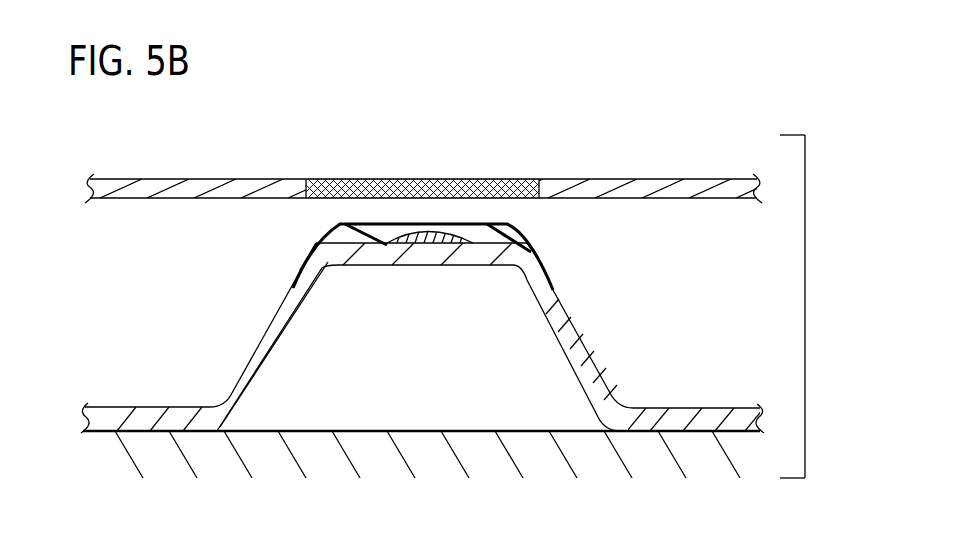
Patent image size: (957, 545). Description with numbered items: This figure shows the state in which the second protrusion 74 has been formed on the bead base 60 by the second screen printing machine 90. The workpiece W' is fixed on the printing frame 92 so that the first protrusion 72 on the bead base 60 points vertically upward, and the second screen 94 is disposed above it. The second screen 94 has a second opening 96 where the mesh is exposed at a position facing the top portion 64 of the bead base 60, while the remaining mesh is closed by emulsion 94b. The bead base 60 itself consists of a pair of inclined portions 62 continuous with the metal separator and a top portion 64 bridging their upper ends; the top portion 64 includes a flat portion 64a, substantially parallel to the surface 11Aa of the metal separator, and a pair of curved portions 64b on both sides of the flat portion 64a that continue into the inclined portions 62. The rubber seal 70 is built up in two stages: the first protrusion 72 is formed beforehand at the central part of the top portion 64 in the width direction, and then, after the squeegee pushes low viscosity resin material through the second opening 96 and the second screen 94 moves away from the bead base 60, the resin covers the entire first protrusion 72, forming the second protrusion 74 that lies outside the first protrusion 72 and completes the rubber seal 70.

The second screen printing machine 90 is at (313, 114).
The printing frame 92 is at (297, 429).
The second screen 94 is at (431, 172).
The emulsion 94b is at (632, 184).
The second opening 96 is at (425, 151).
The bead base 60 is at (422, 283).
The inclined portions 62 is at (240, 386).
The top portion 64 is at (417, 337).
The flat portion 64a is at (423, 264).
The curved portions 64b is at (330, 263).
The rubber seal 70 is at (305, 230).
The first protrusion 72 is at (424, 236).
The second protrusion 74 is at (518, 235).
The workpiece W' is at (118, 298).
The surface of the metal separator 11Aa is at (118, 406).